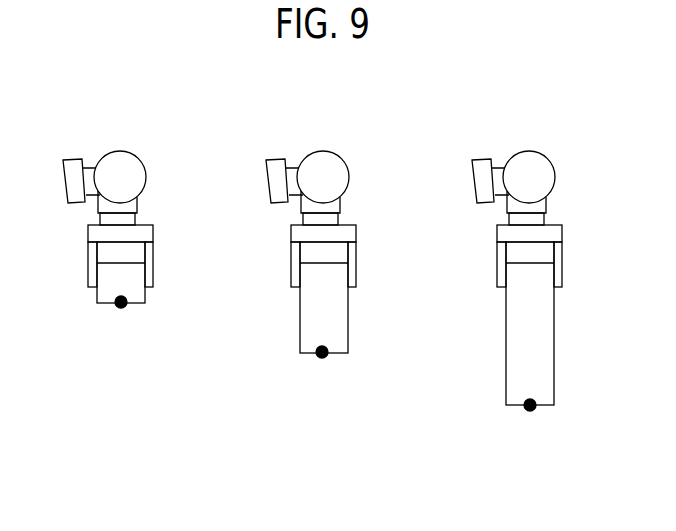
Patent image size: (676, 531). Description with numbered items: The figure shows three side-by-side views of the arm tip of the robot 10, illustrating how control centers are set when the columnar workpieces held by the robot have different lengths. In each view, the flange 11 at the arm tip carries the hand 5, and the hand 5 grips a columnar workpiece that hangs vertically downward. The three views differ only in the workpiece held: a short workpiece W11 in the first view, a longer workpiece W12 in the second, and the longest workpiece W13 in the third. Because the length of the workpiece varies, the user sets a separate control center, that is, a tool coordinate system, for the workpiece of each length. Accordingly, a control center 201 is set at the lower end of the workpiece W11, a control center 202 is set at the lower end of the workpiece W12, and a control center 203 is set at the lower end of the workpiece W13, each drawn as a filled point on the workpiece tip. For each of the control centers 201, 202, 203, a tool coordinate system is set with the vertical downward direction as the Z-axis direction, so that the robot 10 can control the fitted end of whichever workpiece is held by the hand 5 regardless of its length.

The robot 10 is at (73, 156).
The flange 11 is at (98, 217).
The hand 5 is at (88, 273).
The workpiece W11 is at (145, 293).
The workpiece W12 is at (348, 315).
The workpiece W13 is at (554, 358).
The control center 201 is at (122, 308).
The control center 202 is at (322, 358).
The control center 203 is at (530, 411).